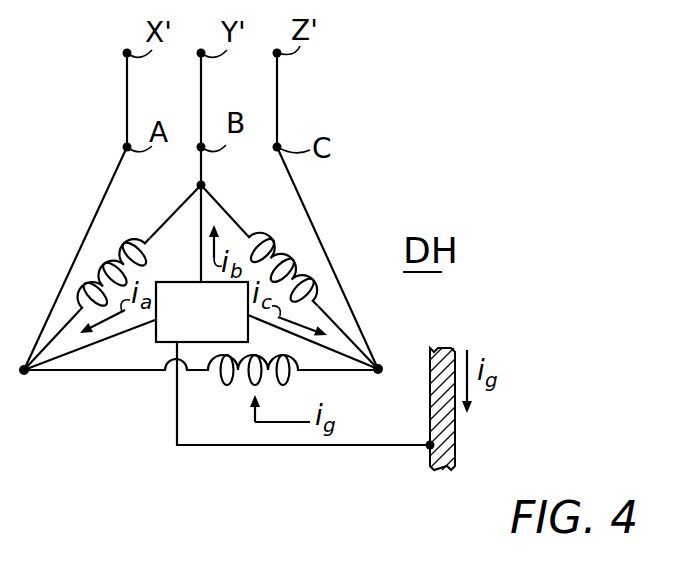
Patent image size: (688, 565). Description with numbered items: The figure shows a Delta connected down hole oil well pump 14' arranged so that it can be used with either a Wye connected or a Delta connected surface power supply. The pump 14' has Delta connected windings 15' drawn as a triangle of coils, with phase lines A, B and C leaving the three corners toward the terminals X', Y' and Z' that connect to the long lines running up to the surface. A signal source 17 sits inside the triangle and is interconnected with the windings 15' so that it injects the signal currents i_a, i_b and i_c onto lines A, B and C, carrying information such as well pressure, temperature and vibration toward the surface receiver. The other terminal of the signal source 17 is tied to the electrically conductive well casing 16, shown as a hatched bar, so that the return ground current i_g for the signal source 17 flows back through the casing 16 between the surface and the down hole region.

The Delta connected down hole pump 14' is at (289, 275).
The Delta connected windings 15' is at (112, 276).
The well casing 16 is at (455, 444).
The signal source 17 is at (156, 334).